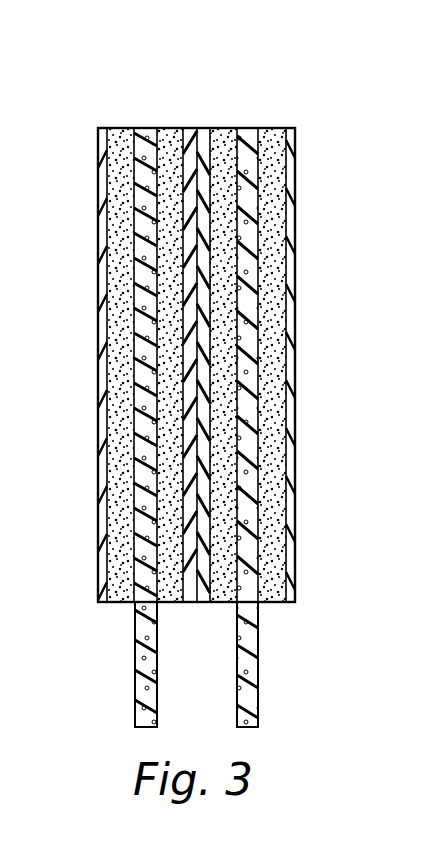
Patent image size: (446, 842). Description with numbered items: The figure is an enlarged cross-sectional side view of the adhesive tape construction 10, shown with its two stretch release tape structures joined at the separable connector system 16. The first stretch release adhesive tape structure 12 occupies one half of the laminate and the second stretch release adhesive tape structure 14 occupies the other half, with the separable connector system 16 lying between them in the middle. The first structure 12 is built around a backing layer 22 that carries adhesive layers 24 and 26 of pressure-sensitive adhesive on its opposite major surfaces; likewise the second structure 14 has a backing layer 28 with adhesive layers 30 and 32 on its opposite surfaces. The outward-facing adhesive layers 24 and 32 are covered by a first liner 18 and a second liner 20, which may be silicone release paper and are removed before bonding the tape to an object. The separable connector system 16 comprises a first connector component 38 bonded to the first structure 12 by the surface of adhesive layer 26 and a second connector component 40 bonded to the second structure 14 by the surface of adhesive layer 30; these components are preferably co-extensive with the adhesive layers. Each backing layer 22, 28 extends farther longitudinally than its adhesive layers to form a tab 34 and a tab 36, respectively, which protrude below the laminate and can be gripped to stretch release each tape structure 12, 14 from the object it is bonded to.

The adhesive tape construction 10 is at (227, 357).
The first stretch release adhesive tape structure 12 is at (112, 320).
The second stretch release adhesive tape structure 14 is at (292, 321).
The separable connector system 16 is at (203, 357).
The first liner 18 is at (103, 452).
The second liner 20 is at (290, 490).
The backing layer 22 is at (143, 210).
The adhesive layer 24 is at (114, 178).
The adhesive layer 26 is at (165, 339).
The backing layer 28 is at (246, 193).
The adhesive layer 30 is at (222, 128).
The adhesive layer 32 is at (277, 160).
The tab 34 is at (137, 663).
The tab 36 is at (257, 668).
The first connector component 38 is at (197, 578).
The second connector component 40 is at (203, 597).